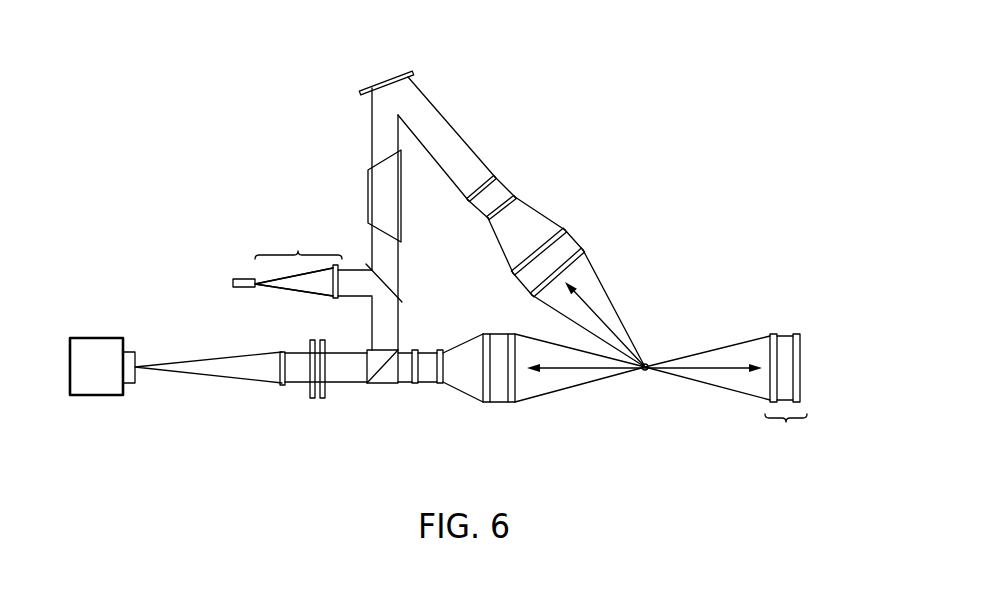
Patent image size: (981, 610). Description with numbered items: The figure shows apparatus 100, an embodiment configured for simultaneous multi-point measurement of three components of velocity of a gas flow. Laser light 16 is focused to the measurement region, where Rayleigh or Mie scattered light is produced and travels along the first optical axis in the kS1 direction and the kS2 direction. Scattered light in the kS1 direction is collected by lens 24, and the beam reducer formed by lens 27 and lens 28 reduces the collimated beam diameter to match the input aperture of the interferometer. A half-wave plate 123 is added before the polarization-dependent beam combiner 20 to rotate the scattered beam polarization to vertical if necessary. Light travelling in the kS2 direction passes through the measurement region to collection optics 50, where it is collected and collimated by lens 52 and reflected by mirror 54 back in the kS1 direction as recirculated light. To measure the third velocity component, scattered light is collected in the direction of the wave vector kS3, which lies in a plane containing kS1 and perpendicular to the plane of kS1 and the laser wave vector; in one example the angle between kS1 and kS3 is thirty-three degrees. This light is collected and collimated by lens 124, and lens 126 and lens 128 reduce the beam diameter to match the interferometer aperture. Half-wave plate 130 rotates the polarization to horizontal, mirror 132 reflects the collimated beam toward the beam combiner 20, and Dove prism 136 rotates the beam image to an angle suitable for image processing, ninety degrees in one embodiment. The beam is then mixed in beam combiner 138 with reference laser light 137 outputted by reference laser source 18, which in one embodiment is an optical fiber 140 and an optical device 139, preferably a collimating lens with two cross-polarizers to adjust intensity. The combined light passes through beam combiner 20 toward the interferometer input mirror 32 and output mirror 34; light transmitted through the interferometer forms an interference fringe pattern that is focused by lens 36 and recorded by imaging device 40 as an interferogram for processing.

The apparatus 100 is at (271, 89).
The mirror 132 is at (412, 72).
The Dove prism 136 is at (368, 192).
The half-wave plate 130 is at (469, 202).
The lens 128 is at (513, 197).
The lens 126 is at (566, 229).
The lens 124 is at (582, 250).
The reference laser source 18 is at (247, 280).
The optical fiber 140 is at (238, 278).
The optical device 139 is at (332, 295).
The reference laser light 137 is at (353, 297).
The beam combiner 138 is at (402, 301).
The imaging device 40 is at (83, 396).
The lens 36 is at (280, 385).
The output mirror 34 is at (310, 397).
The input mirror 32 is at (320, 397).
The optical mixer 20 is at (378, 384).
The half-wave plate 123 is at (417, 385).
The lens 28 is at (442, 385).
The lens 27 is at (488, 403).
The lens 24 is at (512, 403).
The laser light 16 is at (643, 374).
The collection optics 50 is at (762, 361).
The lens 52 is at (772, 336).
The mirror 54 is at (797, 333).
The wave vector kS1 is at (593, 370).
The wave vector kS2 is at (680, 370).
The wave vector kS3 is at (588, 301).